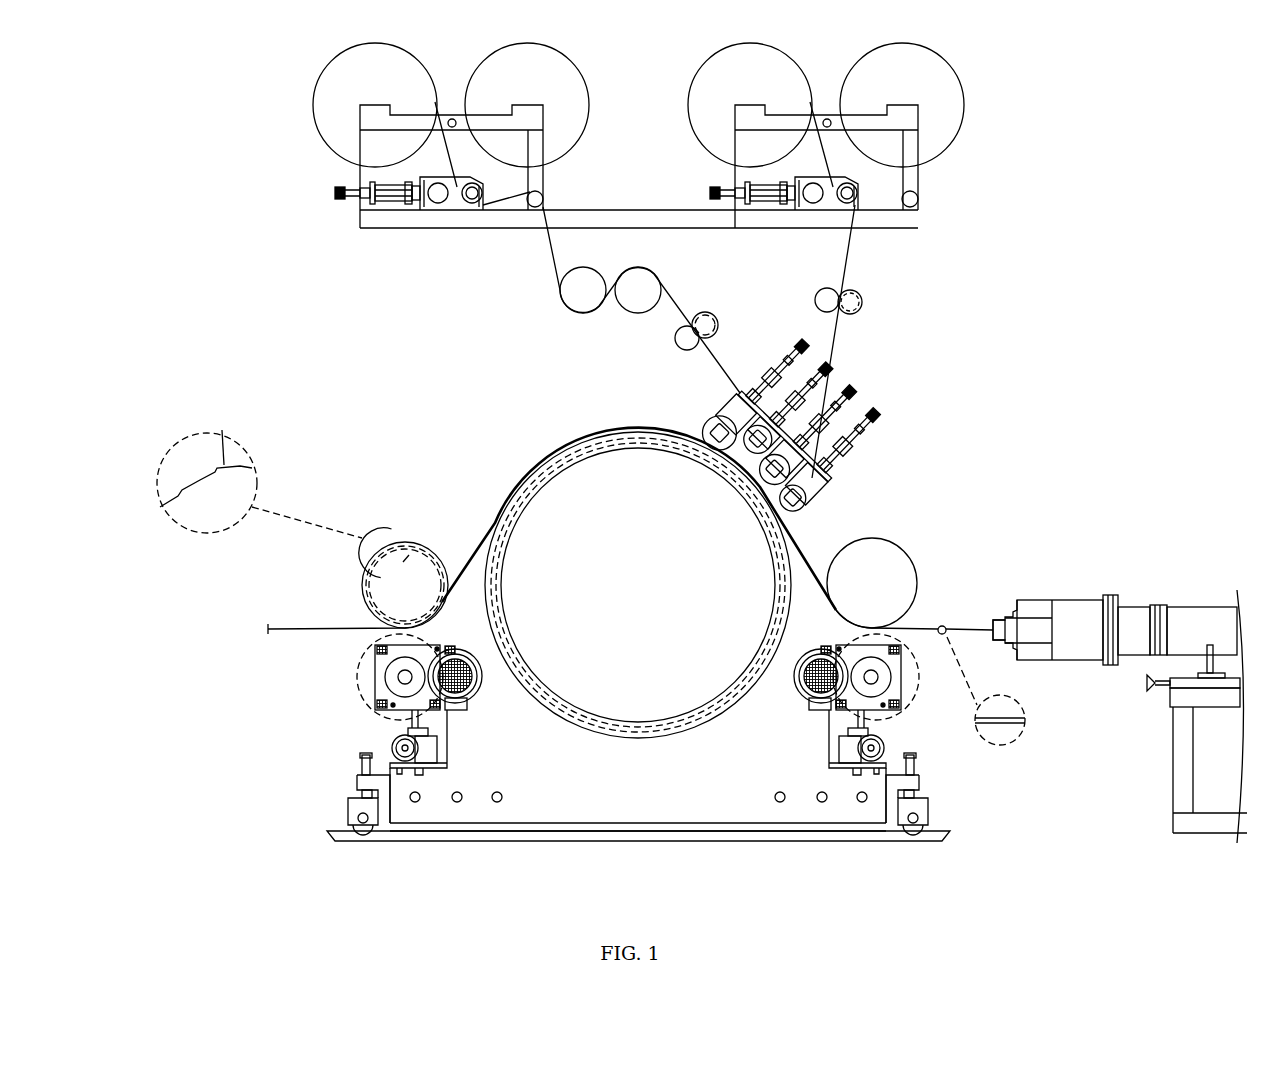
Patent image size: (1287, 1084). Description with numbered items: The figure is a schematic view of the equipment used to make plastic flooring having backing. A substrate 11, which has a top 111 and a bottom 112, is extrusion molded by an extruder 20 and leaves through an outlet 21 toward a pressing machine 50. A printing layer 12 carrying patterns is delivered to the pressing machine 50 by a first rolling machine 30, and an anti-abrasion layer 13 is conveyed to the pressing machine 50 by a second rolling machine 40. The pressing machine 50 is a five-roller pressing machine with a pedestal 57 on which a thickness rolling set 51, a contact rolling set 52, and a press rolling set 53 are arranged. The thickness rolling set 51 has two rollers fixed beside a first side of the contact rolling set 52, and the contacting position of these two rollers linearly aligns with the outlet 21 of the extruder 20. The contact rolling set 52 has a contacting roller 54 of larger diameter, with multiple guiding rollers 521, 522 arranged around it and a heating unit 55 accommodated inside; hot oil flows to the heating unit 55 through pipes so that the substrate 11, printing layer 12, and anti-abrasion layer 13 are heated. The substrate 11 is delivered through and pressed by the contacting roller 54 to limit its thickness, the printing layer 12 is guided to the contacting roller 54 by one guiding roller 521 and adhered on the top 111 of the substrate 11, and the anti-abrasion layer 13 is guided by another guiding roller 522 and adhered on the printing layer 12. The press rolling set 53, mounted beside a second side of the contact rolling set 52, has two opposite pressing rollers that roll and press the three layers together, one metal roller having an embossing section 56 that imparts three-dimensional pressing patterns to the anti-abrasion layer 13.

The substrate 11 is at (1018, 712).
The top 111 is at (1002, 720).
The bottom 112 is at (1002, 720).
The printing layer 12 is at (837, 332).
The anti-abrasion layer 13 is at (553, 260).
The extruder 20 is at (1087, 610).
The outlet 21 is at (992, 630).
The first rolling machine 30 is at (933, 218).
The second rolling machine 40 is at (340, 217).
The pressing machine 50 is at (223, 802).
The thickness rolling set 51 is at (910, 653).
The contact rolling set 52 is at (768, 442).
The guiding roller 521 is at (788, 471).
The guiding roller 522 is at (785, 419).
The press rolling set 53 is at (360, 575).
The contacting roller 54 is at (707, 723).
The heating unit 55 is at (588, 718).
The embossing section 56 is at (225, 465).
The pedestal 57 is at (632, 805).